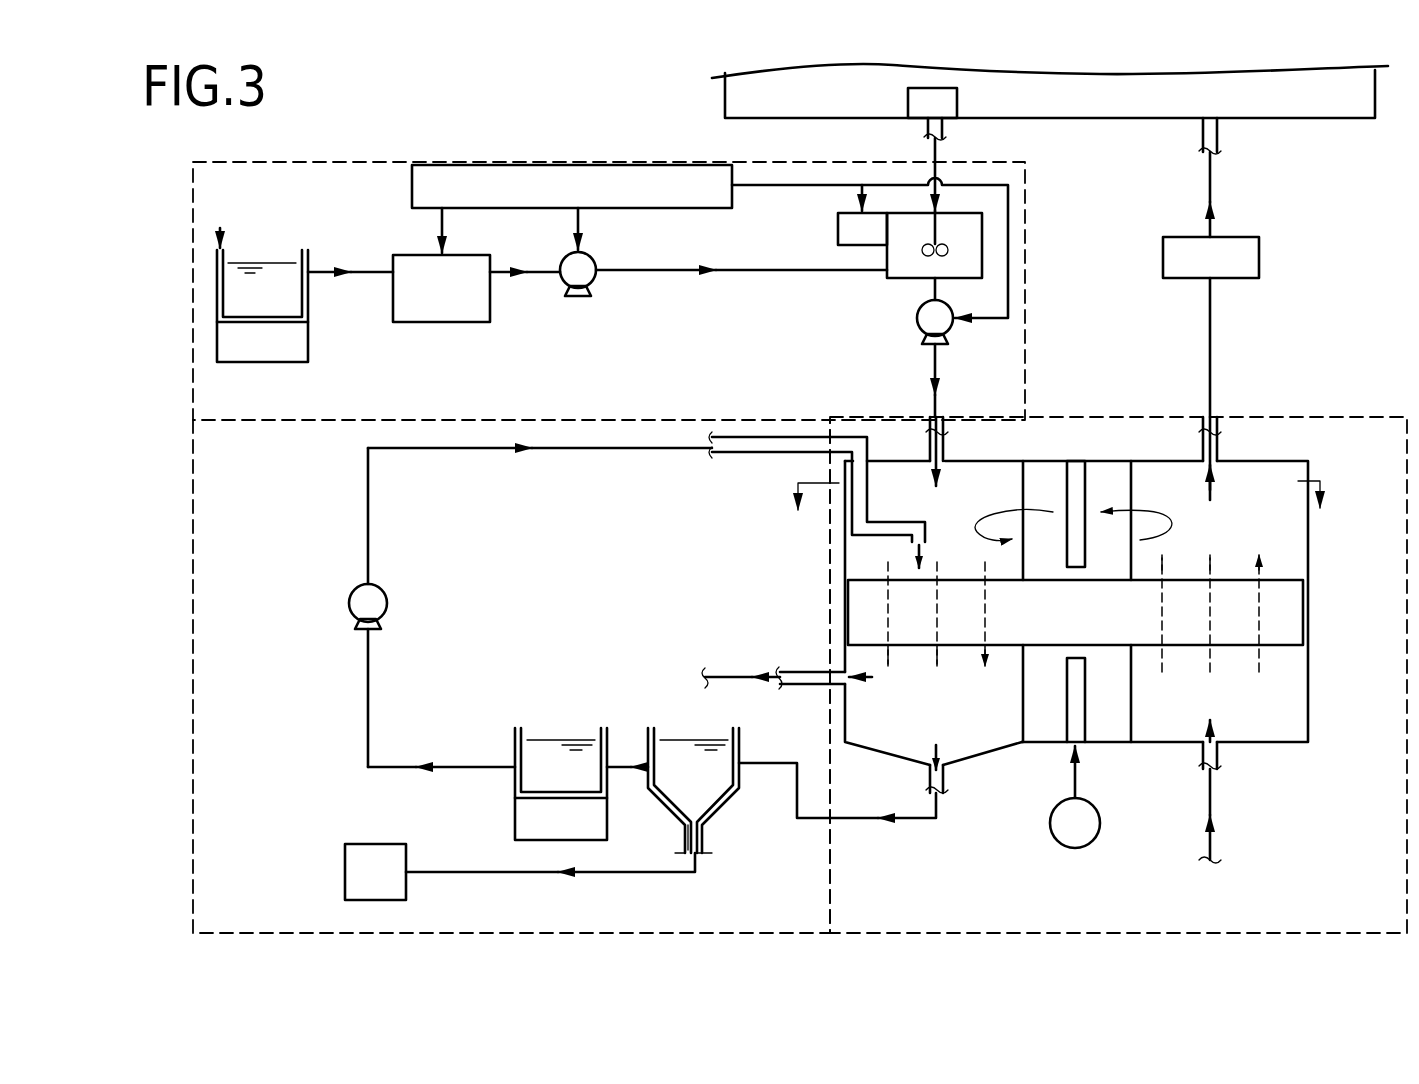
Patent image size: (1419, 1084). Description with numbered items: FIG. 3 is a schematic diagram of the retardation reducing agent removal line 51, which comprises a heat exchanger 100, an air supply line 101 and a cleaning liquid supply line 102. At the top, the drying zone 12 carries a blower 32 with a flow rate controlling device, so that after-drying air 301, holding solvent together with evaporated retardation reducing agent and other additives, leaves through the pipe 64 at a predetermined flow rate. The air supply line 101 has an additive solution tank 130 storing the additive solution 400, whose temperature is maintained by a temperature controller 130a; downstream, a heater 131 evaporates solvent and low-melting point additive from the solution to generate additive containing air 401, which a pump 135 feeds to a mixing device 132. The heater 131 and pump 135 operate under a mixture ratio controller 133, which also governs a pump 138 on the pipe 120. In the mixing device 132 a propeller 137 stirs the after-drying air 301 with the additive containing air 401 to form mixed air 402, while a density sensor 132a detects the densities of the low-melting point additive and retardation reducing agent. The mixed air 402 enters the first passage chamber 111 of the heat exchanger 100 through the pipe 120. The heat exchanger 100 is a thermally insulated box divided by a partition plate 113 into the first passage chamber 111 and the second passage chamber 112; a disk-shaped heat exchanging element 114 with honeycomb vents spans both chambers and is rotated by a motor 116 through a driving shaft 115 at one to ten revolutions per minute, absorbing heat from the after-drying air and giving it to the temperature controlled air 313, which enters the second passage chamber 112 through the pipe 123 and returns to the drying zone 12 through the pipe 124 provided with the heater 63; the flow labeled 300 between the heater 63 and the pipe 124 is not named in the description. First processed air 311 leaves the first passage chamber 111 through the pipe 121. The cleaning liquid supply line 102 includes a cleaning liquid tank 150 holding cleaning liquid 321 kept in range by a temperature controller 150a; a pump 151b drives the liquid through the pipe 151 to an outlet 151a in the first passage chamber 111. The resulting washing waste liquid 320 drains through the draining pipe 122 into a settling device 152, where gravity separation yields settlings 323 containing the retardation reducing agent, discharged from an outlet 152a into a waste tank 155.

The drying zone 12 is at (725, 103).
The blower 32 is at (908, 101).
The pipe 64 is at (940, 130).
The pipe 124 is at (1217, 137).
The steam supply line 300 is at (1210, 182).
The heater 63 is at (1259, 237).
The after-drying air 301 is at (1025, 168).
The air supply line 101 is at (284, 189).
The cleaning liquid supply line 102 is at (224, 488).
The reducing agent removal line 51 is at (1344, 410).
The mixture ratio controller 133 is at (412, 185).
The additive solution tank 130 is at (220, 229).
The additive solution 400 is at (287, 275).
The temperature controller 130a is at (262, 368).
The heater 131 is at (410, 310).
The additive containing air 401 is at (510, 276).
The pump 135 is at (597, 282).
The mixing device 132 is at (885, 285).
The density sensor 132a is at (854, 232).
The propeller 137 is at (918, 251).
The pump 138 is at (918, 335).
The mixed air 402 is at (935, 377).
The heat exchanger 100 is at (1071, 645).
The first passage chamber 111 is at (865, 733).
The second passage chamber 112 is at (1308, 697).
The driving shaft 115 is at (1044, 470).
The heat exchanging element 114 is at (1308, 612).
The partition plate 113 is at (1080, 470).
The motor 116 is at (1094, 843).
The pipe 120 is at (945, 440).
The pipe 121 is at (800, 672).
The draining pipe 122 is at (945, 780).
The pipe 123 is at (1218, 762).
The temperature controlled air 313 is at (1212, 830).
The pipe 151 is at (758, 453).
The outlet 151a is at (910, 545).
The pump 151b is at (372, 607).
The first processed air 311 is at (720, 672).
The cleaning liquid tank 150 is at (513, 781).
The cleaning liquid 321 is at (540, 750).
The temperature controller 150a is at (515, 828).
The washing waste liquid 320 is at (665, 745).
The settling device 152 is at (705, 831).
The outlet 152a is at (687, 836).
The settlings 323 is at (455, 876).
The waste tank 155 is at (352, 857).